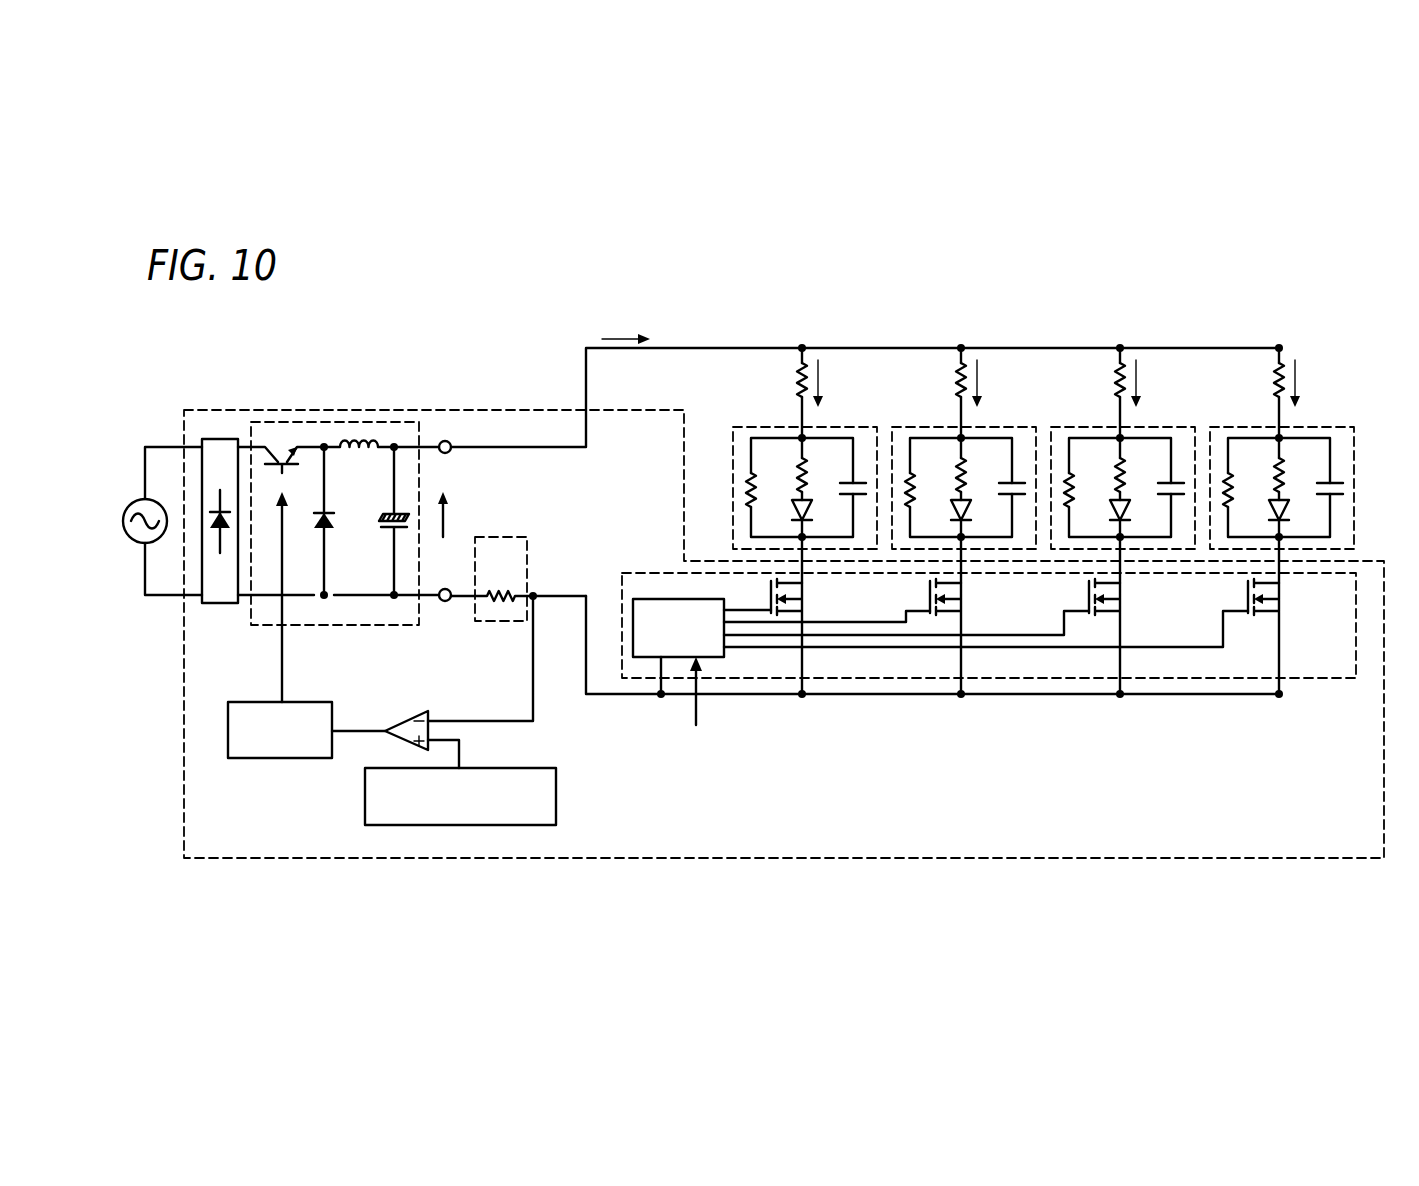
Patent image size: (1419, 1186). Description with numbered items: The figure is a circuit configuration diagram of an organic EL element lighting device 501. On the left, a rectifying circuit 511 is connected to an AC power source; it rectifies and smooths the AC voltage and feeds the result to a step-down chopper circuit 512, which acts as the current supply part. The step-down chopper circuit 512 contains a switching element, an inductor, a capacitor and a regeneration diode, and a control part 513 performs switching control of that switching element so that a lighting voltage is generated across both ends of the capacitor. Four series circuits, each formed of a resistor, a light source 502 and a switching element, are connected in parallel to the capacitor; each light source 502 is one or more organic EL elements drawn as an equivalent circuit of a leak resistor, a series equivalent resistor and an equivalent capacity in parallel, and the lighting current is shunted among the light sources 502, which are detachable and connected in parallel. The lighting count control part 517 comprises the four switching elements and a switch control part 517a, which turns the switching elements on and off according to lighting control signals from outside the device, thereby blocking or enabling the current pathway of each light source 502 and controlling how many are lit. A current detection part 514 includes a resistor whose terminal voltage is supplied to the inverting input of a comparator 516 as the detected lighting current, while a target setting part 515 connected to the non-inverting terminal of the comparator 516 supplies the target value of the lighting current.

The organic EL element lighting device 501 is at (491, 409).
The light source 502 is at (1045, 463).
The rectifying circuit 511 is at (223, 440).
The step-down chopper circuit 512 is at (355, 421).
The control part 513 is at (276, 761).
The current detection part 514 is at (530, 537).
The target setting part 515 is at (556, 806).
The comparator 516 is at (407, 703).
The lighting count control part 517 is at (1316, 680).
The switch control part 517a is at (657, 598).